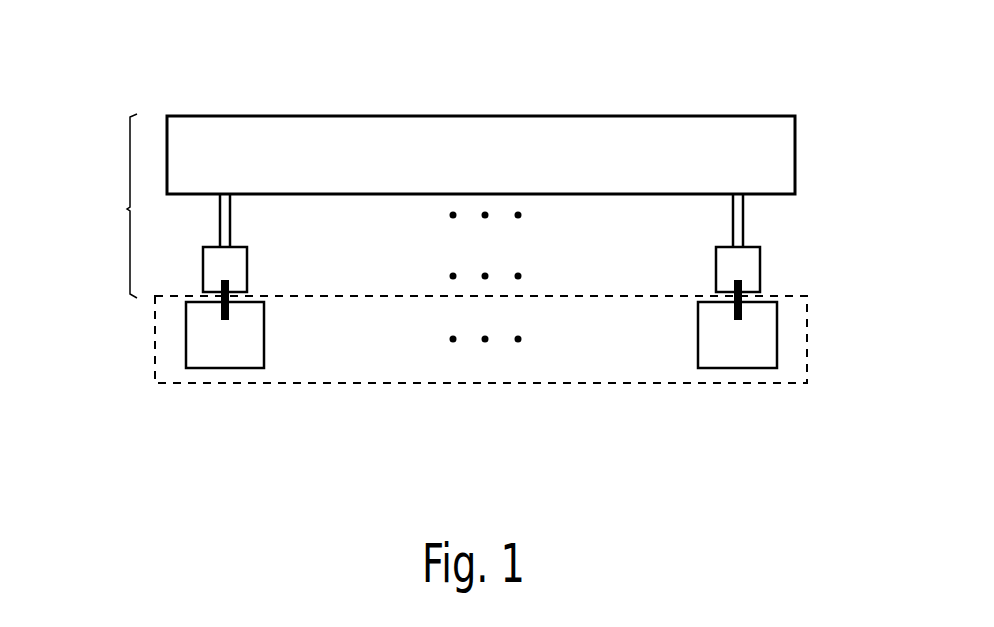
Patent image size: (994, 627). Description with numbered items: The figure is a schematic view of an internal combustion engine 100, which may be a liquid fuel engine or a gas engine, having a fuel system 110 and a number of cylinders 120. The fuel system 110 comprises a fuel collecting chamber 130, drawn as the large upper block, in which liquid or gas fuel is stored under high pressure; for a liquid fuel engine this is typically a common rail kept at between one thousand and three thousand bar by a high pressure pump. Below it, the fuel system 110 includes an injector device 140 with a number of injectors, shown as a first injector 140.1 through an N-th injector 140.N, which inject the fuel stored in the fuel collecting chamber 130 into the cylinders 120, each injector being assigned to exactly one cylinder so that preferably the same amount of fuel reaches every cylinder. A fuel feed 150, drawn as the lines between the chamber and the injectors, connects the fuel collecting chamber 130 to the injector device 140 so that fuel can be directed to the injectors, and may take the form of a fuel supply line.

The internal combustion engine 100 is at (835, 42).
The fuel system 110 is at (108, 206).
The cylinders 120 is at (445, 402).
The fuel collecting chamber 130 is at (466, 108).
The injector device 140 is at (777, 270).
The first injector 140.1 is at (207, 318).
The N-th injector 140.N is at (757, 317).
The fuel feed 150 is at (762, 230).